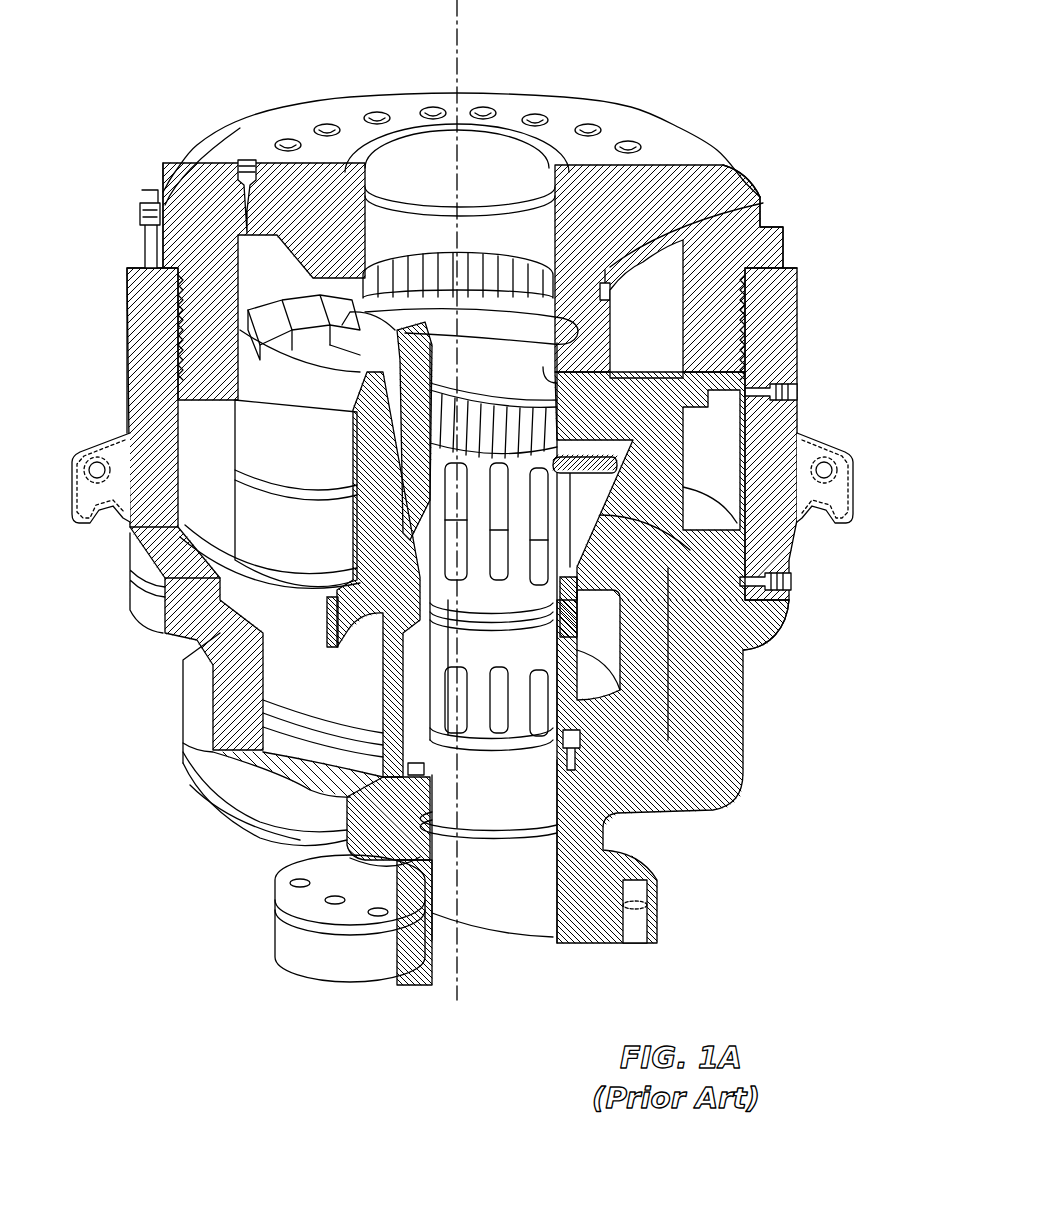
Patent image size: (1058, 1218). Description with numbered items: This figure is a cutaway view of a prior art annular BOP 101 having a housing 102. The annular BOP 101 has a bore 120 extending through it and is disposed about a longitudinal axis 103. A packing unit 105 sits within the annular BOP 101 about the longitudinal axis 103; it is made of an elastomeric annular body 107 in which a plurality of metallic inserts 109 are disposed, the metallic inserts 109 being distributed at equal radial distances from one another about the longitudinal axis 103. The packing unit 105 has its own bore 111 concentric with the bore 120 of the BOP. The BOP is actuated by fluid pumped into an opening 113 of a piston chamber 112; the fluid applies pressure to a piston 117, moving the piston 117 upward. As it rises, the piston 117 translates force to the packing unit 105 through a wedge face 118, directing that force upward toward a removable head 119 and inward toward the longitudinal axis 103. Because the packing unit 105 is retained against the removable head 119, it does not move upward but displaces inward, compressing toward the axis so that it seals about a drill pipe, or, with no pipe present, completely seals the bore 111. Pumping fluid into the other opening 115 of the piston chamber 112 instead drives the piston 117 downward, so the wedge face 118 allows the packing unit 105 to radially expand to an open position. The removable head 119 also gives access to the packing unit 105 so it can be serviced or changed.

The annular BOP 101 is at (645, 62).
The housing 102 is at (140, 413).
The longitudinal axis 103 is at (447, 42).
The packing unit 105 is at (680, 237).
The elastomeric annular body 107 is at (633, 347).
The metallic inserts 109 is at (265, 345).
The bore 111 is at (553, 367).
The piston chamber 112 is at (718, 432).
The opening 113 is at (791, 582).
The opening 115 is at (797, 393).
The piston 117 is at (762, 599).
The wedge face 118 is at (745, 655).
The removable head 119 is at (198, 183).
The bore 120 is at (543, 905).